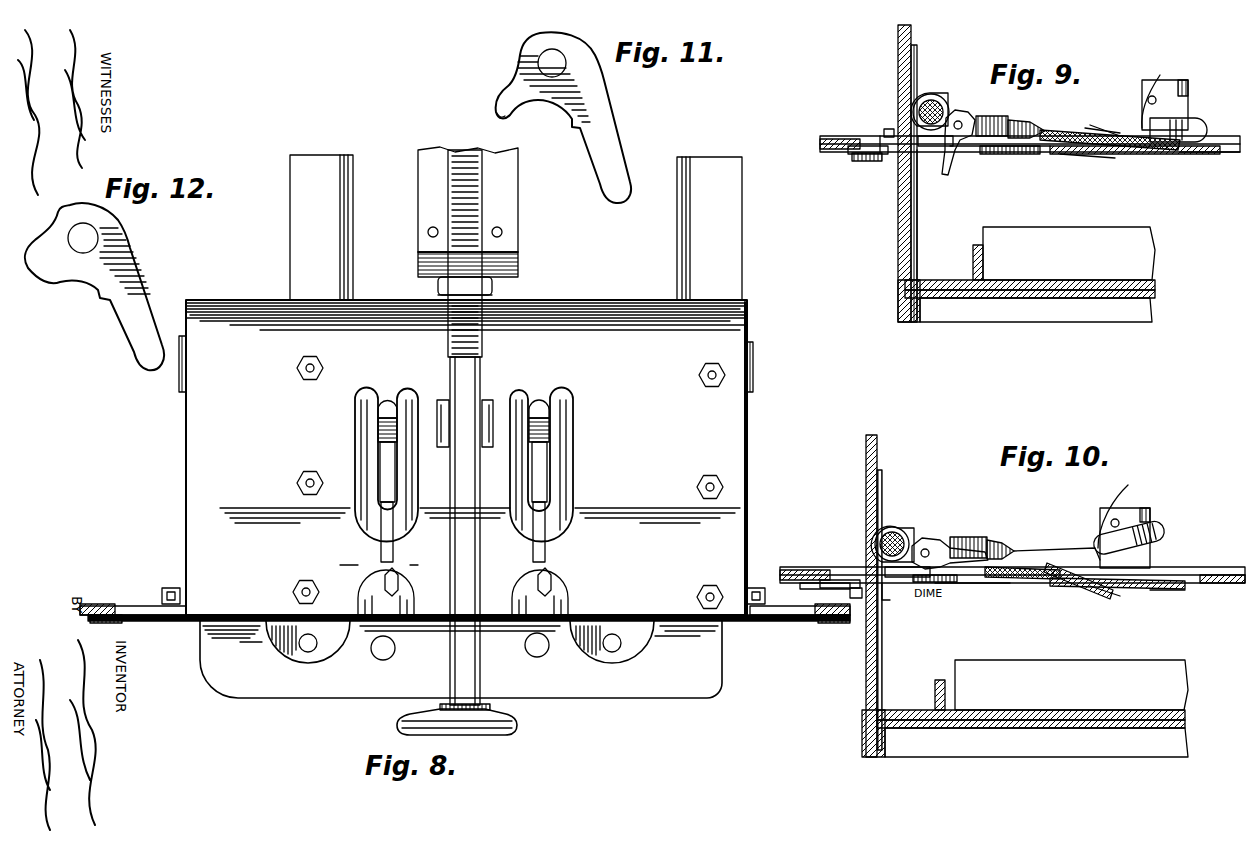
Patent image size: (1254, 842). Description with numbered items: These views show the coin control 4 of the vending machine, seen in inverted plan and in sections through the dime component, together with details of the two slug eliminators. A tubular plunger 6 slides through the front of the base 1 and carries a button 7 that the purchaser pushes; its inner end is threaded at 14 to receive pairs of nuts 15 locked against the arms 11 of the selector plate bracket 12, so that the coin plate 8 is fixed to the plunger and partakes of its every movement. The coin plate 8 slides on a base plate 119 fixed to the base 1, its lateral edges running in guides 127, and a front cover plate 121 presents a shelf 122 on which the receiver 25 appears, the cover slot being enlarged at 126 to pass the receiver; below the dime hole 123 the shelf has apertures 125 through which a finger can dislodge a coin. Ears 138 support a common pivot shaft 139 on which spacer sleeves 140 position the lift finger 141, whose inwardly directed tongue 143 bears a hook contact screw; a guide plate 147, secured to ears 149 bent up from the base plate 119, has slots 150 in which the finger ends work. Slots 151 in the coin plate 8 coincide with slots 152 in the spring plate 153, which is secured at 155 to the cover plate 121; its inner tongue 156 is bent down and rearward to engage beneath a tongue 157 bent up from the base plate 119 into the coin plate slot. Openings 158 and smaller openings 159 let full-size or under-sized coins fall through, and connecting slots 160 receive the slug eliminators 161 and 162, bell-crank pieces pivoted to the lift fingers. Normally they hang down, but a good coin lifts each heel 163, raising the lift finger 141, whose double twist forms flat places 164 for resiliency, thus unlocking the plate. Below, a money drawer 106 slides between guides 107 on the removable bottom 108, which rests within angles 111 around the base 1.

In FIG. 9, the base 1 is at (898, 36).
In FIG. 10, the base 1 is at (866, 448).
In FIG. 8, the coin control 4 is at (443, 457).
In FIG. 9, the coin control 4 is at (883, 235).
In FIG. 10, the coin control 4 is at (940, 460).
In FIG. 8, the tubular plunger 6 is at (480, 660).
In FIG. 8, the button 7 is at (515, 732).
In FIG. 8, the coin plate 8 is at (360, 444).
In FIG. 9, the coin plate 8 is at (1205, 140).
In FIG. 10, the coin plate 8 is at (1225, 585).
In FIG. 8, the arms 11 is at (495, 282).
In FIG. 8, the selector plate bracket 12 is at (505, 214).
In FIG. 8, the threaded portion 14 is at (480, 168).
In FIG. 8, the nuts 15 is at (480, 260).
In FIG. 9, the coin receiver 25 is at (830, 138).
In FIG. 10, the coin receiver 25 is at (892, 596).
In FIG. 9, the money drawer 106 is at (1062, 236).
In FIG. 10, the money drawer 106 is at (1098, 670).
In FIG. 9, the longitudinal guides 107 is at (975, 248).
In FIG. 10, the longitudinal guides 107 is at (940, 678).
In FIG. 9, the removable bottom 108 is at (960, 300).
In FIG. 10, the removable bottom 108 is at (930, 730).
In FIG. 9, the angles 111 is at (930, 286).
In FIG. 10, the angles 111 is at (885, 712).
In FIG. 8, the base plate 119 is at (745, 432).
In FIG. 9, the base plate 119 is at (1195, 155).
In FIG. 10, the base plate 119 is at (1150, 592).
In FIG. 8, the front cover plate 121 is at (760, 622).
In FIG. 9, the front cover plate 121 is at (898, 52).
In FIG. 10, the front cover plate 121 is at (866, 490).
In FIG. 8, the shelf 122 is at (665, 700).
In FIG. 9, the shelf 122 is at (850, 152).
In FIG. 10, the shelf 122 is at (866, 578).
In FIG. 9, the dime hole 123 is at (878, 135).
In FIG. 8, the apertures 125 is at (388, 660).
In FIG. 10, the slot enlargement 126 is at (855, 572).
In FIG. 8, the guides 127 is at (300, 262).
In FIG. 8, the ears 138 is at (180, 566).
In FIG. 8, the common pivot shaft 139 is at (162, 590).
In FIG. 9, the common pivot shaft 139 is at (890, 130).
In FIG. 10, the common pivot shaft 139 is at (850, 596).
In FIG. 9, the spacer sleeves 140 is at (915, 106).
In FIG. 10, the spacer sleeves 140 is at (892, 544).
In FIG. 9, the lift finger 141 is at (1029, 119).
In FIG. 10, the lift finger 141 is at (992, 537).
In FIG. 9, the tongue 143 is at (1092, 125).
In FIG. 10, the tongue 143 is at (1050, 540).
In FIG. 9, the guide plate 147 is at (1184, 80).
In FIG. 10, the guide plate 147 is at (1150, 512).
In FIG. 8, the ears 149 is at (180, 380).
In FIG. 9, the slots 150 is at (1200, 120).
In FIG. 10, the slots 150 is at (1175, 556).
In FIG. 8, the slots 151 is at (370, 469).
In FIG. 9, the slots 151 is at (1120, 156).
In FIG. 10, the slots 151 is at (1170, 590).
In FIG. 9, the slots 152 is at (1000, 100).
In FIG. 10, the slots 152 is at (995, 537).
In FIG. 9, the spring plate 153 is at (1075, 130).
In FIG. 10, the spring plate 153 is at (1035, 566).
In FIG. 9, the securing points 155 is at (862, 162).
In FIG. 10, the securing points 155 is at (864, 578).
In FIG. 8, the tongues 156 is at (378, 420).
In FIG. 9, the tongues 156 is at (1130, 158).
In FIG. 10, the tongues 156 is at (1100, 594).
In FIG. 8, the tongues 157 is at (385, 392).
In FIG. 9, the tongues 157 is at (1095, 140).
In FIG. 10, the tongues 157 is at (1075, 560).
In FIG. 8, the openings 158 is at (355, 510).
In FIG. 9, the openings 158 is at (1020, 156).
In FIG. 10, the openings 158 is at (1000, 590).
In FIG. 8, the openings 159 is at (360, 592).
In FIG. 9, the openings 159 is at (928, 155).
In FIG. 10, the openings 159 is at (898, 590).
In FIG. 8, the slots 160 is at (392, 552).
In FIG. 9, the slots 160 is at (1010, 160).
In FIG. 10, the slots 160 is at (950, 585).
In FIG. 8, the slug eliminator 161 is at (398, 580).
In FIG. 11, the slug eliminator 161 is at (606, 140).
In FIG. 9, the slug eliminator 161 is at (965, 140).
In FIG. 10, the slug eliminator 161 is at (938, 546).
In FIG. 8, the slug eliminator 162 is at (552, 578).
In FIG. 12, the slug eliminator 162 is at (138, 280).
In FIG. 11, the heel 163 is at (500, 96).
In FIG. 9, the heel 163 is at (942, 93).
In FIG. 10, the heel 163 is at (910, 528).
In FIG. 9, the flat places 164 is at (1152, 80).
In FIG. 10, the flat places 164 is at (1130, 488).